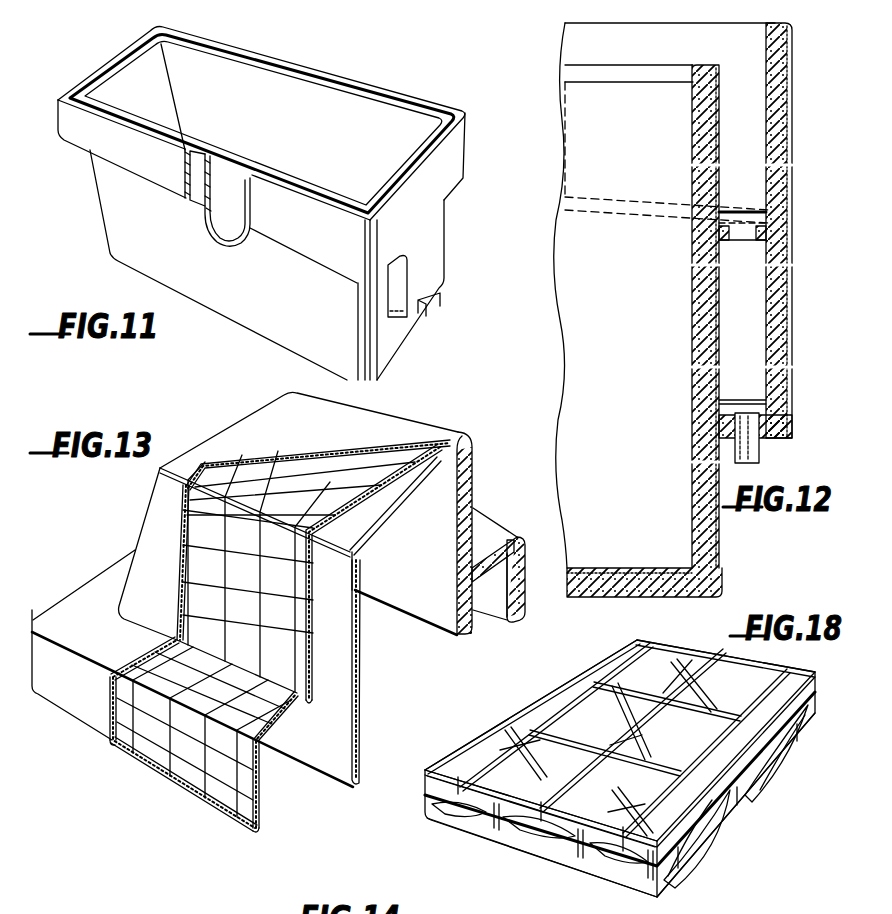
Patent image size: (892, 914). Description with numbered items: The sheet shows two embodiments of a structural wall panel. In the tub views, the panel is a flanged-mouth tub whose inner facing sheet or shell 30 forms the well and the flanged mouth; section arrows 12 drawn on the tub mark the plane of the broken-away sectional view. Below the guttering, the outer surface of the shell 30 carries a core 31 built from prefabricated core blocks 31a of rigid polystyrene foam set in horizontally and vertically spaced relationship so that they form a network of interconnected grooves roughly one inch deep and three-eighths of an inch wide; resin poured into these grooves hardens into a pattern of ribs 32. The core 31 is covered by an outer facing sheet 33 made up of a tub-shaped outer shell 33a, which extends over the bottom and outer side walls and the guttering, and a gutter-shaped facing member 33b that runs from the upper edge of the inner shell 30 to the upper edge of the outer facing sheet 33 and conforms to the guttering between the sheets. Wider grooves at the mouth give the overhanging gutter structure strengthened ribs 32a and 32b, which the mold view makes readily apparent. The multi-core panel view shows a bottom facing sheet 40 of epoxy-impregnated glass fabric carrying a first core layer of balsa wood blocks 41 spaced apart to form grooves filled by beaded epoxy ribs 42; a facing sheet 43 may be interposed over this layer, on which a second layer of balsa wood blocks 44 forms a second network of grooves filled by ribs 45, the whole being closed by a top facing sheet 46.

In FIG. 11, the section line 12- 12 is at (456, 151).
In FIG. 11, the inner facing sheet or shell 30 is at (300, 146).
In FIG. 12, the inner facing sheet or shell 30 is at (693, 490).
In FIG. 13, the inner facing sheet or shell 30 is at (430, 594).
In FIG. 12, the core 31 is at (697, 323).
In FIG. 13, the core 31 is at (311, 623).
In FIG. 13, the core blocks 31a is at (207, 582).
In FIG. 13, the ribs 32 is at (335, 490).
In FIG. 13, the rib 32a is at (300, 693).
In FIG. 12, the rib 32b is at (773, 78).
In FIG. 13, the rib 32b is at (183, 767).
In FIG. 11, the outer facing sheet 33 is at (120, 226).
In FIG. 12, the outer facing sheet 33 is at (722, 520).
In FIG. 13, the outer facing sheet 33 is at (82, 575).
In FIG. 12, the tub-shaped outer shell 33a is at (792, 157).
In FIG. 13, the tub-shaped outer shell 33a is at (482, 527).
In FIG. 12, the gutter-shaped facing member 33b is at (770, 123).
In FIG. 13, the gutter-shaped facing member 33b is at (495, 602).
In FIG. 18, the bottom facing sheet 40 is at (441, 824).
In FIG. 18, the balsa wood blocks 41 is at (490, 823).
In FIG. 18, the ribs 42 is at (573, 857).
In FIG. 18, the facing sheet 43 is at (647, 853).
In FIG. 18, the balsa wood blocks 44 is at (478, 800).
In FIG. 18, the ribs 45 is at (713, 663).
In FIG. 18, the top facing sheet 46 is at (610, 665).